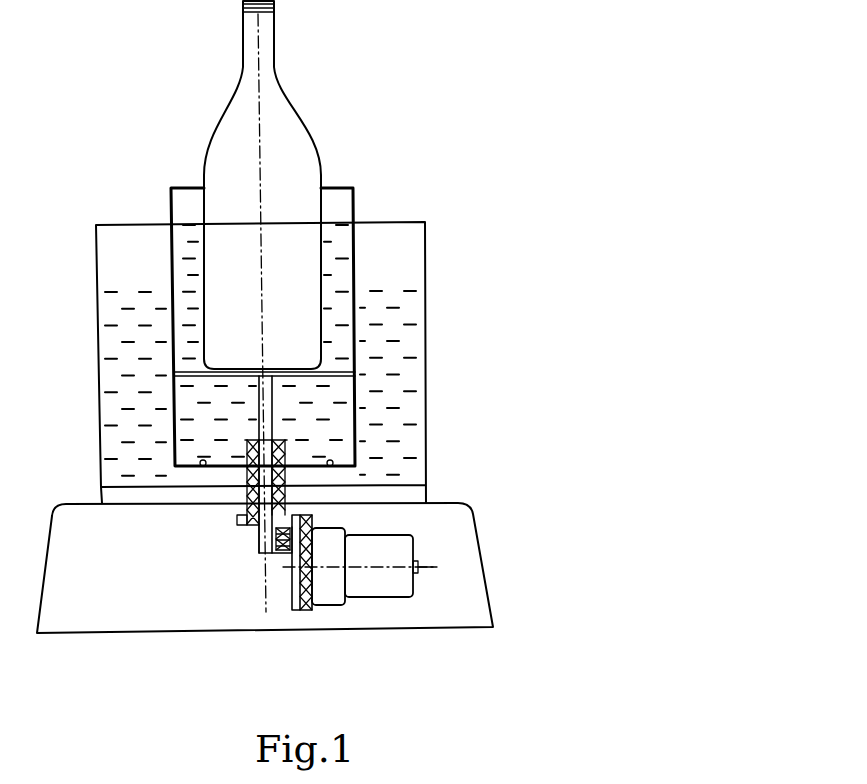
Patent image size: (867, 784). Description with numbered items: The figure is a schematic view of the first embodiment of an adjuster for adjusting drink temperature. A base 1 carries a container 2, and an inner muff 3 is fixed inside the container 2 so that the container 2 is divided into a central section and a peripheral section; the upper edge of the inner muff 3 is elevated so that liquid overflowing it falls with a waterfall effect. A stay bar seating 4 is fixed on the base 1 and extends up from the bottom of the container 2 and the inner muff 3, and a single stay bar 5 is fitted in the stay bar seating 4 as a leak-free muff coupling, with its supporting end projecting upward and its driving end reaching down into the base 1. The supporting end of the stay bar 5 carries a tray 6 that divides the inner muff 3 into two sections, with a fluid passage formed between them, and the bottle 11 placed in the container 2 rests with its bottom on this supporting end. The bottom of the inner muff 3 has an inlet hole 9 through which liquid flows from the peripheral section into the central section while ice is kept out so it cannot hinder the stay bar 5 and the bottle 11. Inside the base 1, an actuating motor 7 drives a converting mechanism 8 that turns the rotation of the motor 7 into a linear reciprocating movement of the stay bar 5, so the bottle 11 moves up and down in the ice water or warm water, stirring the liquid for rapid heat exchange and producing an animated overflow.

The base 1 is at (487, 568).
The container 2 is at (425, 280).
The inner muff 3 is at (355, 242).
The stay bar seating 4 is at (240, 527).
The stay bar 5 is at (264, 553).
The tray 6 is at (355, 369).
The actuating motor 7 is at (387, 597).
The converting mechanism 8 is at (283, 553).
The inlet hole 9 is at (334, 464).
The bottle 11 is at (277, 127).